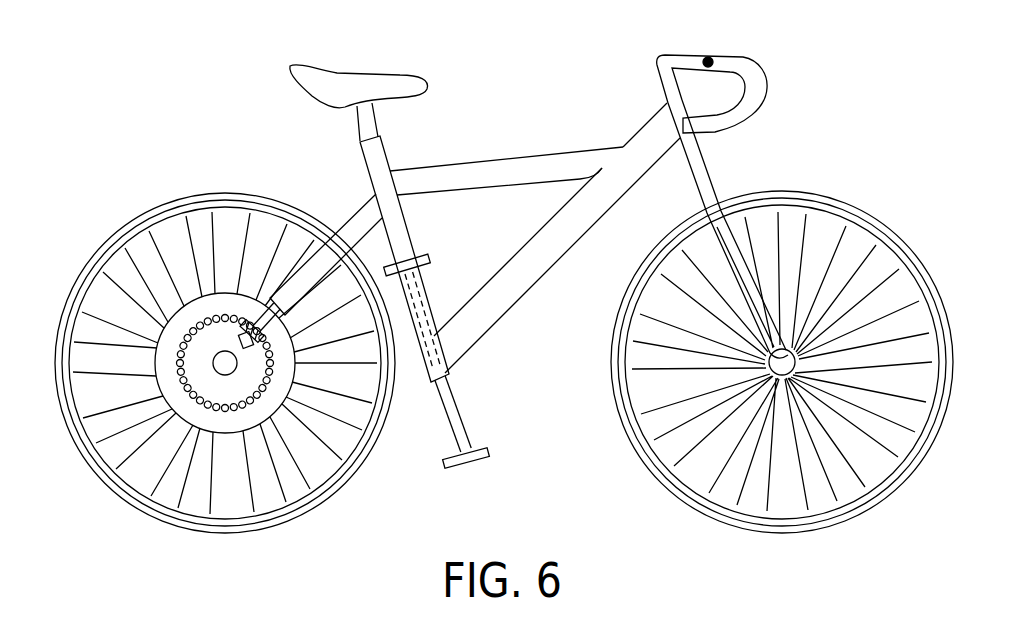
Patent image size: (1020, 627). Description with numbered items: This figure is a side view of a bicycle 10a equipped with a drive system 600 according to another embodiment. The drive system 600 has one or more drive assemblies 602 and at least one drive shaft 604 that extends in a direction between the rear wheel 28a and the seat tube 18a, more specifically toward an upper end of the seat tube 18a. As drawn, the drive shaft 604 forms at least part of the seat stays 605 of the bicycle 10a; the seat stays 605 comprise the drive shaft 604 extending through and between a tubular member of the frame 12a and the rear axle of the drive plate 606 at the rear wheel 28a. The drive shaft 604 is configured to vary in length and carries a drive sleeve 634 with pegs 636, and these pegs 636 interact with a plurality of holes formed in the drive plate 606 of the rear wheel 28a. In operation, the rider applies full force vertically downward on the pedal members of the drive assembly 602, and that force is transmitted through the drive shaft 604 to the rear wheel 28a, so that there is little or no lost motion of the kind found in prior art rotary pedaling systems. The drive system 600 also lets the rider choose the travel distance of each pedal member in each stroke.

The bicycle 10a is at (218, 92).
The frame 12a is at (533, 145).
The seat tube 18a is at (403, 235).
The rear wheel 28a is at (142, 518).
The drive system 600 is at (297, 412).
The drive assembly 602 is at (477, 378).
The drive shaft 604 is at (255, 320).
The seat stays 605 is at (358, 210).
The drive plate 606 is at (270, 404).
The drive sleeve 634 is at (170, 322).
The pegs 636 is at (250, 318).